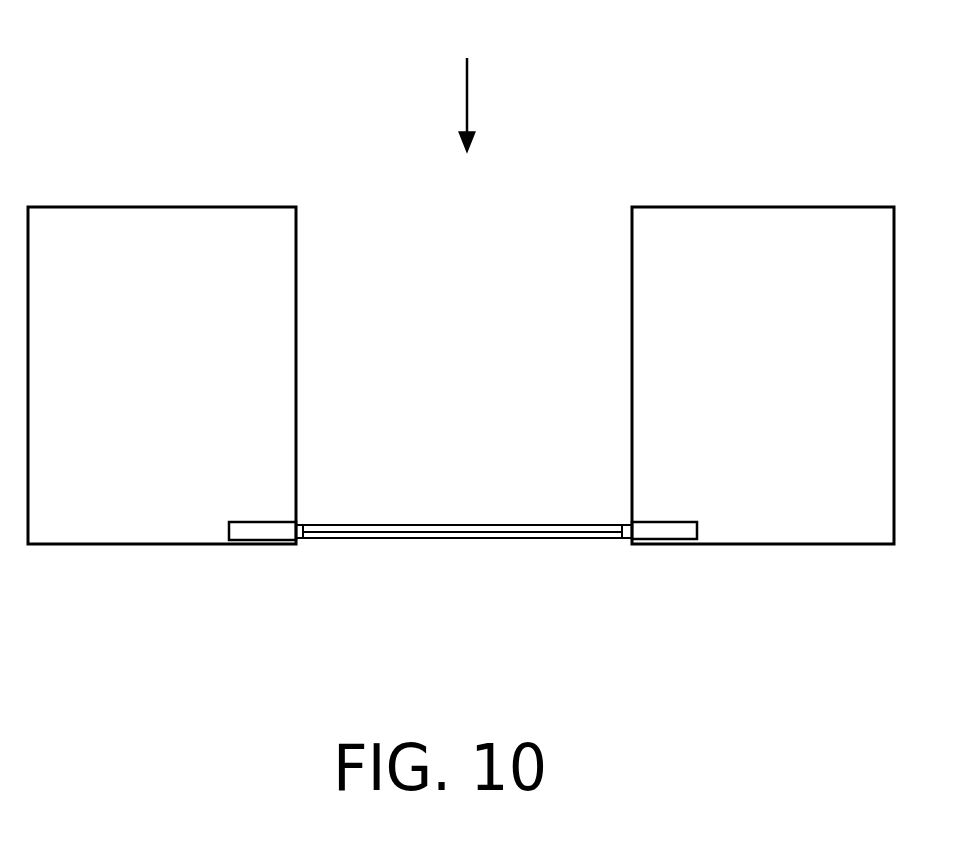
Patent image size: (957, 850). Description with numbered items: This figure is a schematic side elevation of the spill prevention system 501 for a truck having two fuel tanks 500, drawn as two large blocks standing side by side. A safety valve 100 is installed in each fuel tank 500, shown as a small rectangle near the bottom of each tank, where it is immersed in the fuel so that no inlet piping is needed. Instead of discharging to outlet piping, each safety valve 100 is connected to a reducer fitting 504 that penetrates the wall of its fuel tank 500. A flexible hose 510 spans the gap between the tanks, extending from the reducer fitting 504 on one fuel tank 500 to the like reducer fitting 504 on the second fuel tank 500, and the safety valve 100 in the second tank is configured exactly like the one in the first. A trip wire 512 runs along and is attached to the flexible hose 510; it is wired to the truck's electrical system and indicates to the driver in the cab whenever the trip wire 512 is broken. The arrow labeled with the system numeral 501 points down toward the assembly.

The safety valve 100 is at (268, 530).
The fuel tank 500 is at (296, 400).
The spill prevention system 501 is at (460, 78).
The reducer fitting 504 is at (297, 536).
The flexible hose 510 is at (388, 528).
The trip wire 512 is at (510, 538).